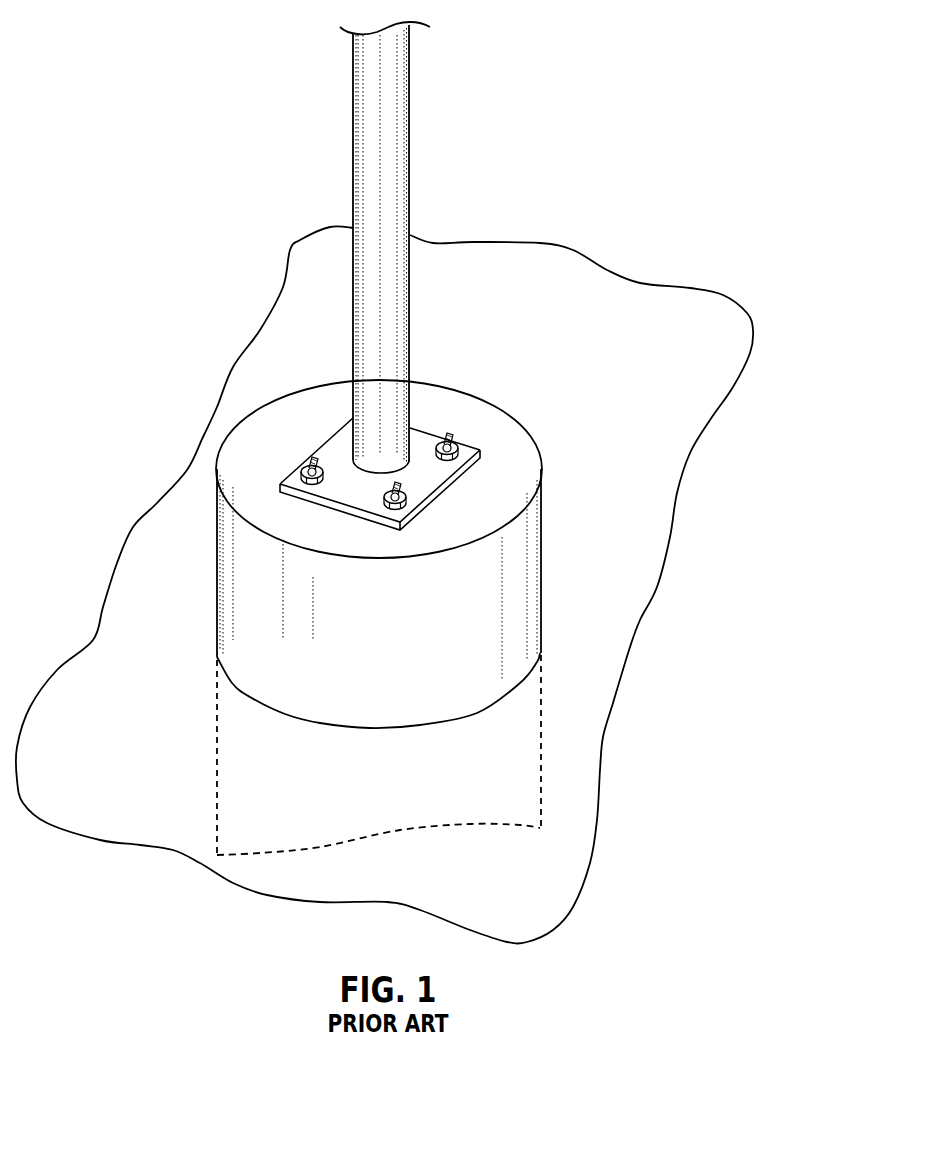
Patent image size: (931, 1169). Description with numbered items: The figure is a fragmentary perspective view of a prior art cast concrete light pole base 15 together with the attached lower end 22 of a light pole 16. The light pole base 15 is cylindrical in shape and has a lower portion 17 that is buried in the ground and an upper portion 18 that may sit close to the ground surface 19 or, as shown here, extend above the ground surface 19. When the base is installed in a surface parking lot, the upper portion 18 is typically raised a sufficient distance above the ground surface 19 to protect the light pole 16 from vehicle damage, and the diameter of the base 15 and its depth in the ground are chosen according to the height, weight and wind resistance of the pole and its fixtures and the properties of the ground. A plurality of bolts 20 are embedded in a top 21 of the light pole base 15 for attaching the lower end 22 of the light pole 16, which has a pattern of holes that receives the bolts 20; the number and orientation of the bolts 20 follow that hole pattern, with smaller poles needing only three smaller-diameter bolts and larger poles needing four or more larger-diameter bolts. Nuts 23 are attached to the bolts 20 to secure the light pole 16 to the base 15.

The light pole base 15 is at (413, 438).
The light pole 16 is at (410, 303).
The lower portion 17 is at (543, 742).
The upper portion 18 is at (427, 554).
The ground surface 19 is at (570, 250).
The bolts 20 is at (311, 468).
The top 21 is at (503, 497).
The lower end 22 is at (483, 457).
The nuts 23 is at (287, 483).